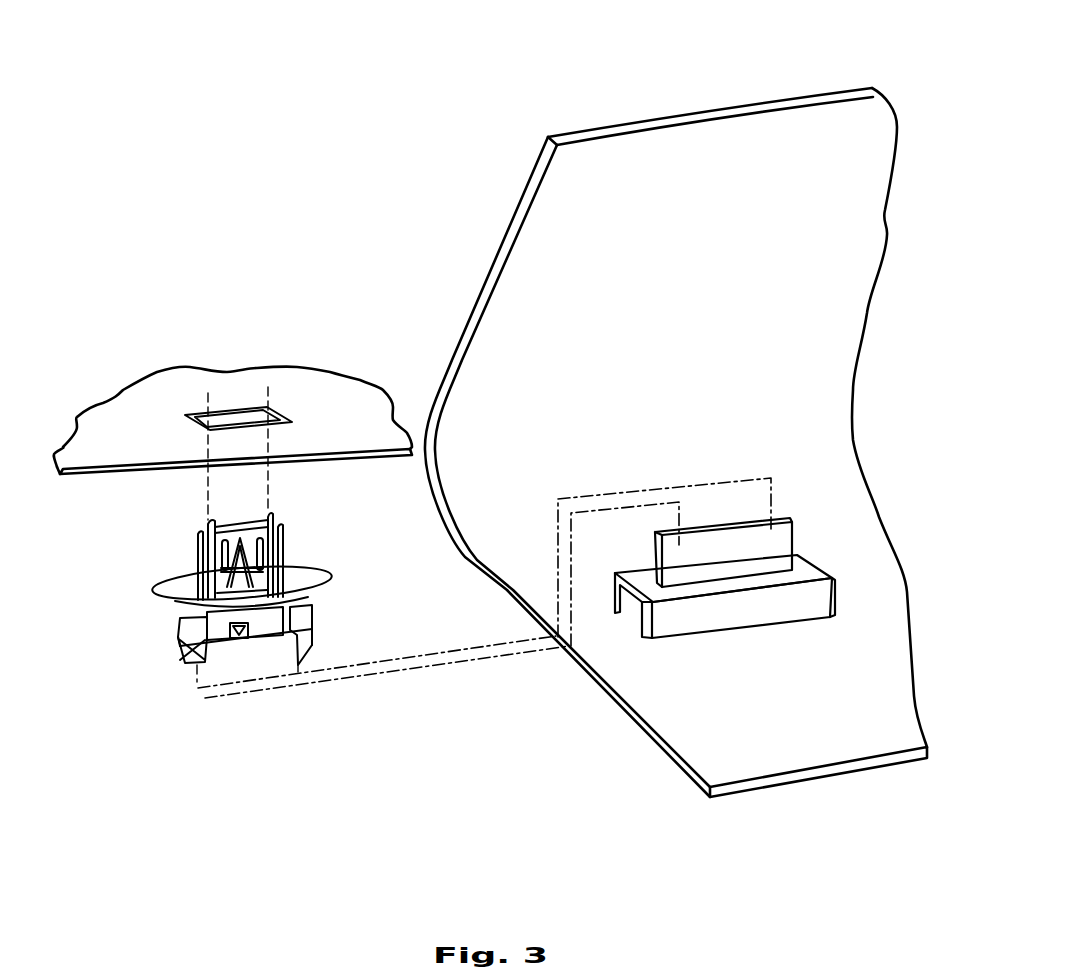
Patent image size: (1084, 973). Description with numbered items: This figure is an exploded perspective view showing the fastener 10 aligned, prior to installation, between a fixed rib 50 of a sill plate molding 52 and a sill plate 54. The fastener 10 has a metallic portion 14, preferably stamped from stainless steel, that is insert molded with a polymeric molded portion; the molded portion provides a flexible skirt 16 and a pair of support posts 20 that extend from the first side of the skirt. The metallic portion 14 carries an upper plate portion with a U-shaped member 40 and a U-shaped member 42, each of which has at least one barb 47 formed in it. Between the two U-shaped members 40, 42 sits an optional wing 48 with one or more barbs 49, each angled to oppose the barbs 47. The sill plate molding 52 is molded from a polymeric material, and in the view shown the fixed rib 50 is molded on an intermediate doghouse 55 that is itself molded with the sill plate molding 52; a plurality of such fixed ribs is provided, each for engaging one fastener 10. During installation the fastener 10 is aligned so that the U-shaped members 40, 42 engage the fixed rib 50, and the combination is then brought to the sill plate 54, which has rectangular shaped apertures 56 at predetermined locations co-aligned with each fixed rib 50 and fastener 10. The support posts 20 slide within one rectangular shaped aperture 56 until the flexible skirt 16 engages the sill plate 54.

The fastener 10 is at (223, 623).
The metallic portion 14 is at (218, 635).
The flexible skirt 16 is at (158, 588).
The support posts 20 is at (200, 533).
The U-shaped member 40 is at (182, 645).
The U-shaped member 42 is at (305, 630).
The barb 47 is at (180, 632).
The wing 48 is at (232, 645).
The barbs 49 is at (240, 628).
The fixed rib 50 is at (772, 540).
The sill plate molding 52 is at (820, 730).
The sill plate 54 is at (153, 402).
The doghouse 55 is at (668, 623).
The rectangular shaped apertures 56 is at (273, 410).